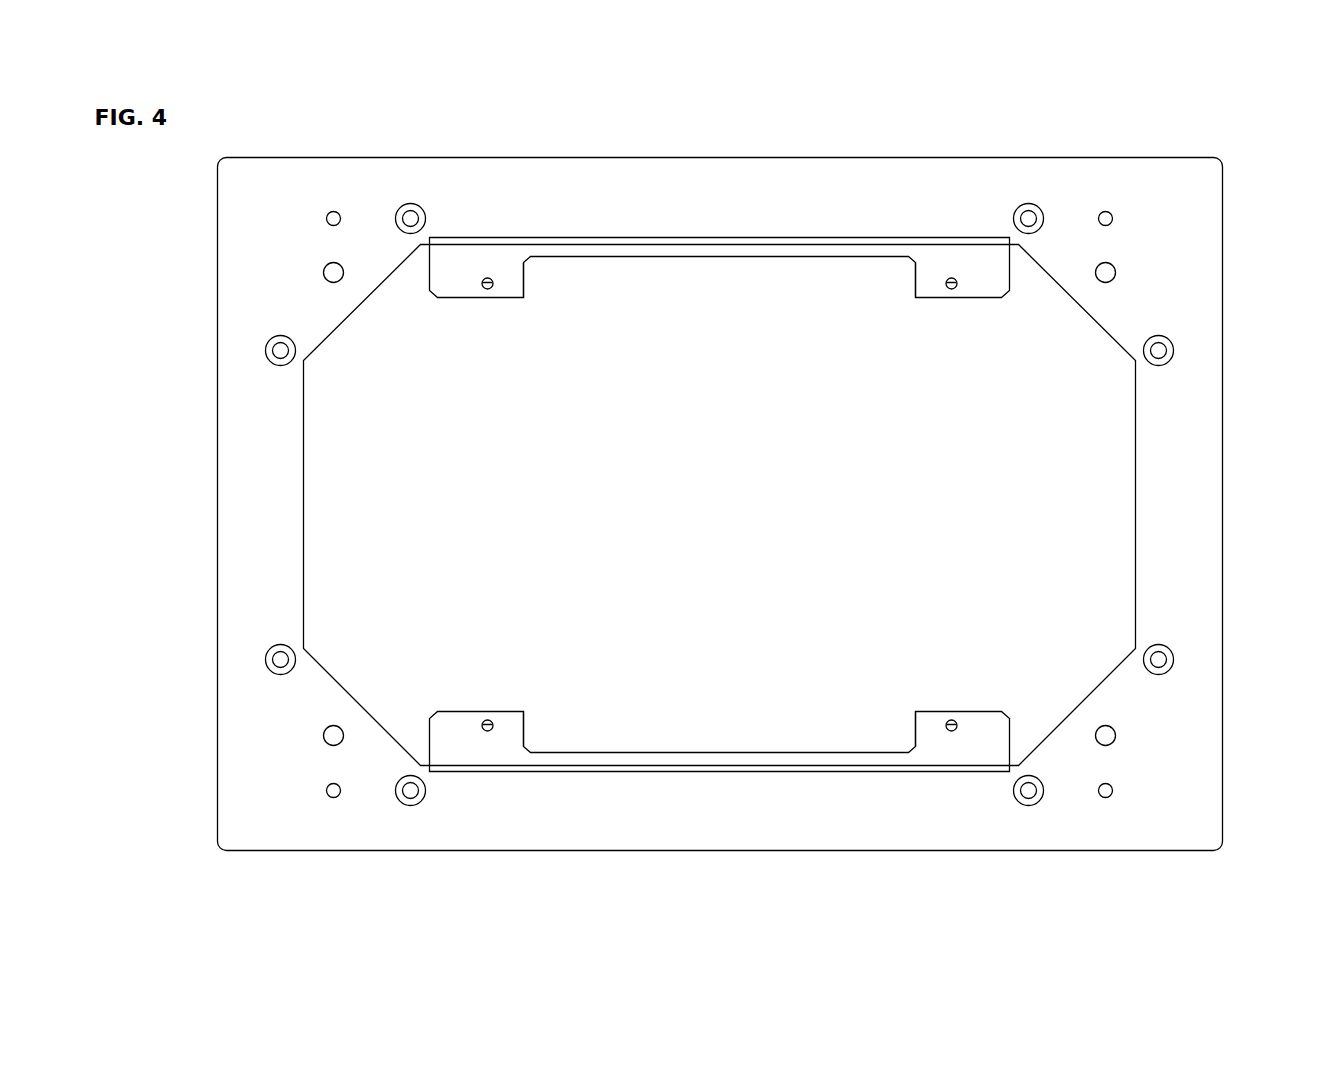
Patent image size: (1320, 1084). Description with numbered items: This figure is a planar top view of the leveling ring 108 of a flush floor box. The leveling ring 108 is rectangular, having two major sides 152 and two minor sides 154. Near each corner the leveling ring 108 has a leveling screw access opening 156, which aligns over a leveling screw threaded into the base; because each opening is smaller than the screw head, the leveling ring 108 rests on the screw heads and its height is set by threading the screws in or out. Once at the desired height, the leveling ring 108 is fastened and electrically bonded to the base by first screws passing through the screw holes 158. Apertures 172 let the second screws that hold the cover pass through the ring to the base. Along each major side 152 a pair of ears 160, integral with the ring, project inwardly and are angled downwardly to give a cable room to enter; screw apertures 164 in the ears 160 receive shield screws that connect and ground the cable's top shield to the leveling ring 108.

The leveling ring 108 is at (1222, 842).
The major sides 152 is at (746, 148).
The minor sides 154 is at (202, 479).
The leveling screw access openings 156 is at (333, 272).
The screw holes 158 is at (410, 218).
The ears 160 is at (523, 292).
The screw apertures 164 is at (487, 289).
The apertures 172 is at (333, 218).